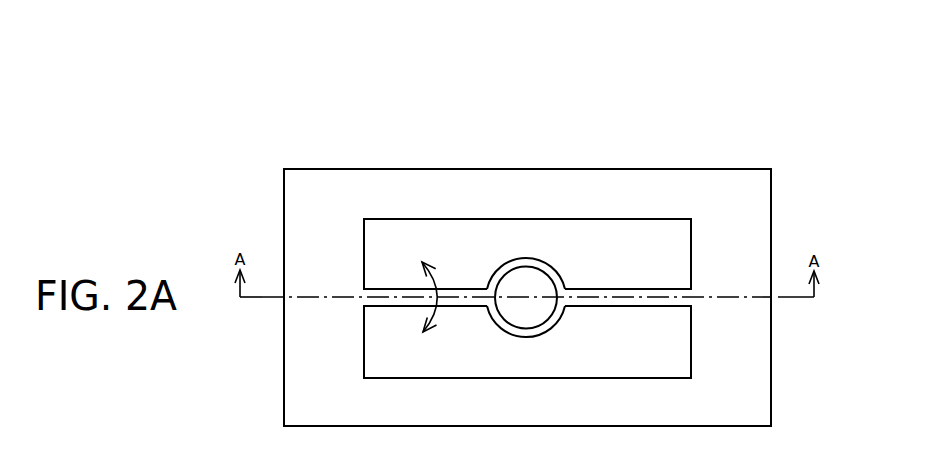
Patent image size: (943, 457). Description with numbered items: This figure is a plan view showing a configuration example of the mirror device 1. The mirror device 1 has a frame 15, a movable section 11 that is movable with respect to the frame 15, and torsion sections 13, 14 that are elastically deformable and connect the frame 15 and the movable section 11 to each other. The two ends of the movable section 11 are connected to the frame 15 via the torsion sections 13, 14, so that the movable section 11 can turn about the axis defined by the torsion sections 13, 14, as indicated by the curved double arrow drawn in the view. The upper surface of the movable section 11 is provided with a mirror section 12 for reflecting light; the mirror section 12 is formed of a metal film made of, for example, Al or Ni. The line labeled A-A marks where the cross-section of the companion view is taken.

The mirror device 1 is at (676, 158).
The movable section 11 is at (562, 262).
The mirror section 12 is at (528, 282).
The torsion section 13 is at (466, 292).
The torsion section 14 is at (628, 294).
The frame 15 is at (727, 193).